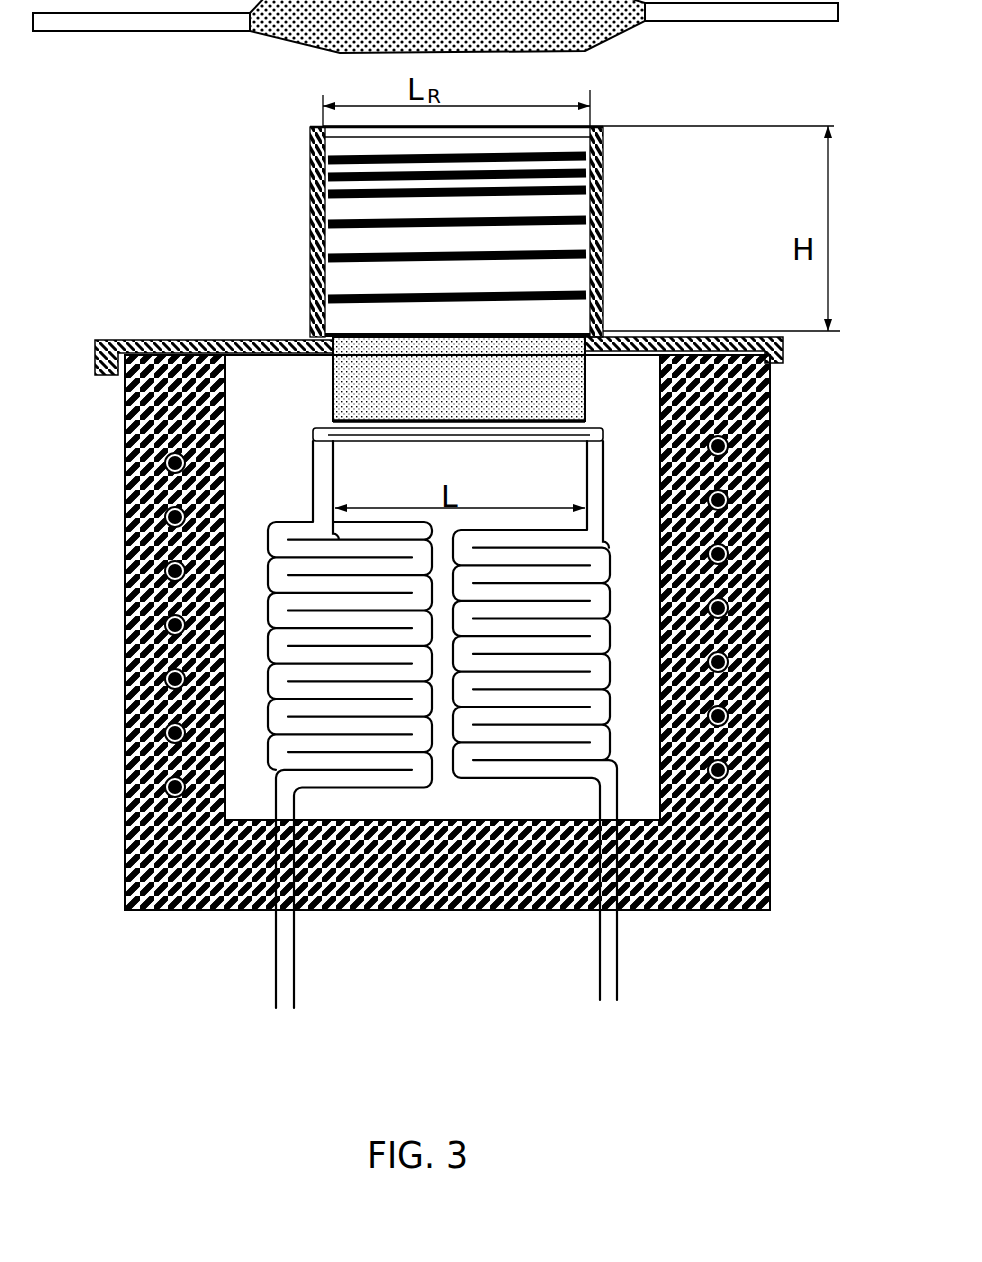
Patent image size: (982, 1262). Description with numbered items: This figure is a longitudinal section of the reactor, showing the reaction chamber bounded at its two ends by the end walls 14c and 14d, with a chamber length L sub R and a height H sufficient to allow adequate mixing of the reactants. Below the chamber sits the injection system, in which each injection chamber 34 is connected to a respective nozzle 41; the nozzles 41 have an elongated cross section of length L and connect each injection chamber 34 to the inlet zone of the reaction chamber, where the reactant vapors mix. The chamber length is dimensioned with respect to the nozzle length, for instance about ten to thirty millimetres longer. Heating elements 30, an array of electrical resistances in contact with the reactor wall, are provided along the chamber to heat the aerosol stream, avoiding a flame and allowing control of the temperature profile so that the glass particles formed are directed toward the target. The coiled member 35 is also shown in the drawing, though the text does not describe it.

The end wall 14c is at (605, 183).
The end wall 14d is at (312, 228).
The heating elements 30 is at (370, 263).
The nozzle 41 is at (560, 378).
The injection chamber 34 is at (578, 441).
The cooling coil 35 is at (275, 680).